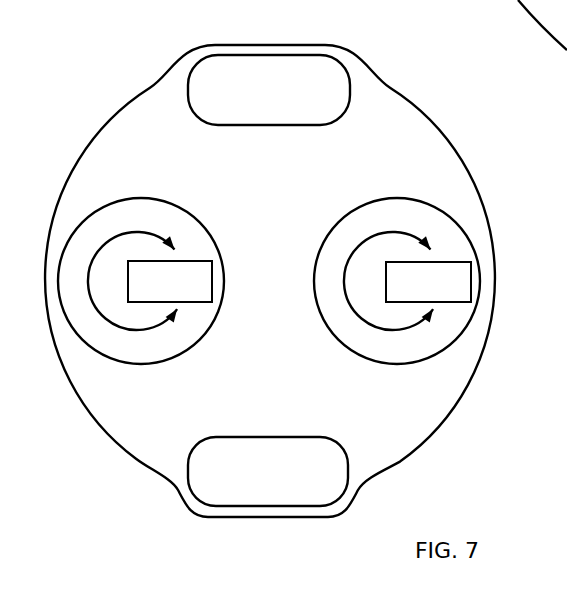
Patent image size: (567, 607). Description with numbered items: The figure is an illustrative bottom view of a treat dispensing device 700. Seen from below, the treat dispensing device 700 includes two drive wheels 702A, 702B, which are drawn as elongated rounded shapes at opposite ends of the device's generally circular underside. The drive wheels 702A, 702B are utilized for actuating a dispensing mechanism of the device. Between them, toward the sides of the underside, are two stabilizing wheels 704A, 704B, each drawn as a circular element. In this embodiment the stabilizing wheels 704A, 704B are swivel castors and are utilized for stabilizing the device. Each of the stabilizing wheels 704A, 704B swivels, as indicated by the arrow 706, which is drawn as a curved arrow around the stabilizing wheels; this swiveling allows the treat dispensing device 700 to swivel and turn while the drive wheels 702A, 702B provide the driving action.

The treat dispensing device 700 is at (106, 50).
The drive wheel 702A is at (241, 103).
The drive wheel 702B is at (240, 484).
The stabilizing wheel 704A is at (142, 293).
The stabilizing wheel 704B is at (400, 294).
The arrow 706 is at (405, 233).